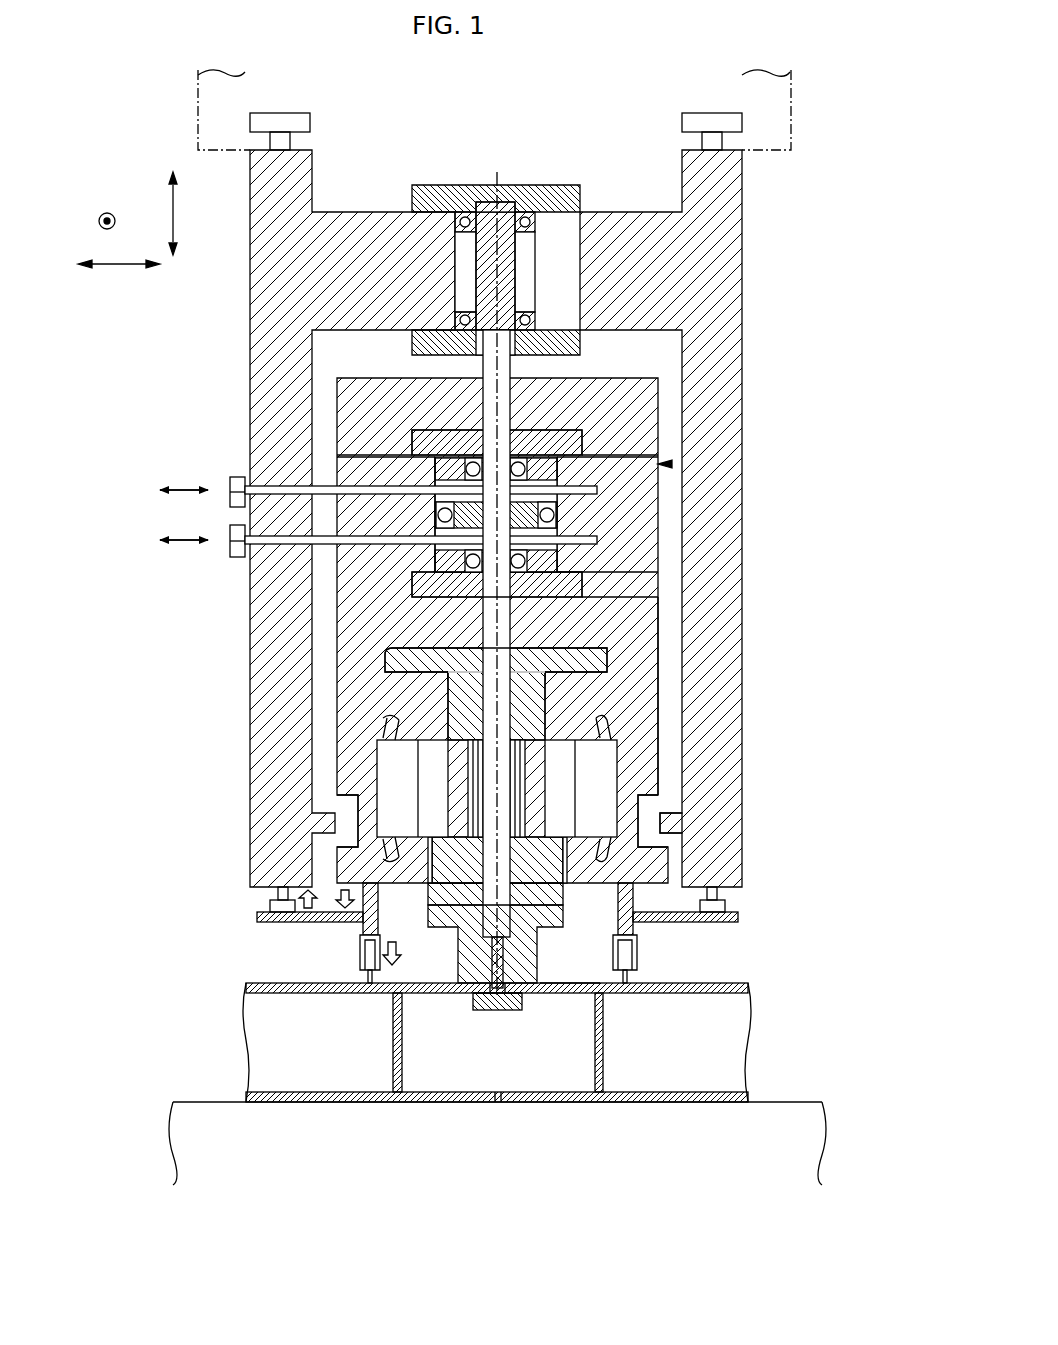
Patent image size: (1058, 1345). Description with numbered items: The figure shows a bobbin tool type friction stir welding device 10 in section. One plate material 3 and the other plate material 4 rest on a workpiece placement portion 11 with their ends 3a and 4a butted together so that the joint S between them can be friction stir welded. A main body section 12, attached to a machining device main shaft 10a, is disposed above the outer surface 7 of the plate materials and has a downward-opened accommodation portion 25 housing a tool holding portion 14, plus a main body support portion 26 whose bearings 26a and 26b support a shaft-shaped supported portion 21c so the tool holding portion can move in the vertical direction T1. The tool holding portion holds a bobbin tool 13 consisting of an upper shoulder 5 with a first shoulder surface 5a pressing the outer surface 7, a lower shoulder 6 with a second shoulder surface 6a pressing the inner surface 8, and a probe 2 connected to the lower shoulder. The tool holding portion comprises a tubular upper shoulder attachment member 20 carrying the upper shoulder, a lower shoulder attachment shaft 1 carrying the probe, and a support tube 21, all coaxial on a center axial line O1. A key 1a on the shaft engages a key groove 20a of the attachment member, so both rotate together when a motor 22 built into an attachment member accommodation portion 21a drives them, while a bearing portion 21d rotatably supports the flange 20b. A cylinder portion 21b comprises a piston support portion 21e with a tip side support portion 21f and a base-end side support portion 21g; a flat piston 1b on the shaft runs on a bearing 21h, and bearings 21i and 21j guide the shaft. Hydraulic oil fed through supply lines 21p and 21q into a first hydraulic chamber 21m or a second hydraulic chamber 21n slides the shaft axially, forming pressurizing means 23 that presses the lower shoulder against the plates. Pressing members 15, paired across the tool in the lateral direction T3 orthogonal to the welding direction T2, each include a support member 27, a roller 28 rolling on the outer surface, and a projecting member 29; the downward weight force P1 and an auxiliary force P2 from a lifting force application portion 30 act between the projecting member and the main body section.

The lower shoulder attachment shaft 1 is at (484, 628).
The key 1a is at (500, 765).
The piston 1b is at (530, 497).
The probe 2 is at (470, 972).
The plate material 3 is at (250, 987).
The end of plate material 3a is at (508, 1104).
The plate material 4 is at (748, 985).
The end of plate material 4a is at (497, 1108).
The upper shoulder 5 is at (534, 952).
The first shoulder surface 5a is at (455, 970).
The lower shoulder 6 is at (500, 1012).
The second shoulder surface 6a is at (480, 1010).
The outer surface 7 is at (568, 982).
The inner surface 8 is at (598, 998).
The friction stir welding device 10 is at (768, 183).
The machining device main shaft 10a is at (793, 130).
The workpiece placement portion 11 is at (802, 1096).
The main body section 12 is at (725, 290).
The bobbin tool 13 is at (398, 996).
The tool holding portion 14 is at (656, 607).
The pressing member 15 is at (358, 940).
The upper shoulder attachment member 20 is at (540, 692).
The key groove 20a is at (505, 812).
The flange 20b is at (395, 660).
The support tube 21 is at (350, 742).
The attachment member accommodation portion 21a is at (340, 775).
The cylinder portion 21b is at (345, 470).
The supported portion 21c is at (478, 260).
The bearing portion 21d is at (603, 638).
The piston support portion 21e is at (623, 512).
The tip side support portion 21f is at (572, 586).
The base-end side support portion 21g is at (600, 440).
The bearing 21h is at (553, 513).
The bearing 21i is at (440, 556).
The bearing 21j is at (430, 462).
The first hydraulic chamber 21m is at (430, 588).
The second hydraulic chamber 21n is at (425, 445).
The hydraulic oil supply line 21p is at (240, 534).
The hydraulic oil supply line 21q is at (243, 484).
The motor 22 is at (393, 805).
The pressurizing means 23 is at (672, 464).
The accommodation portion 25 is at (733, 716).
The main body support portion 26 is at (730, 213).
The bearing 26a is at (532, 316).
The bearing 26b is at (526, 217).
The support member 27 is at (378, 905).
The roller 28 is at (360, 960).
The projecting member 29 is at (262, 917).
The lifting force application portion 30 is at (270, 906).
The center axial line O1 is at (499, 178).
The force of weight P1 is at (302, 890).
The auxiliary force P2 is at (340, 890).
The joint S is at (465, 1014).
The vertical direction T1 is at (160, 213).
The direction of welding T2 is at (103, 213).
The lateral direction T3 is at (119, 278).